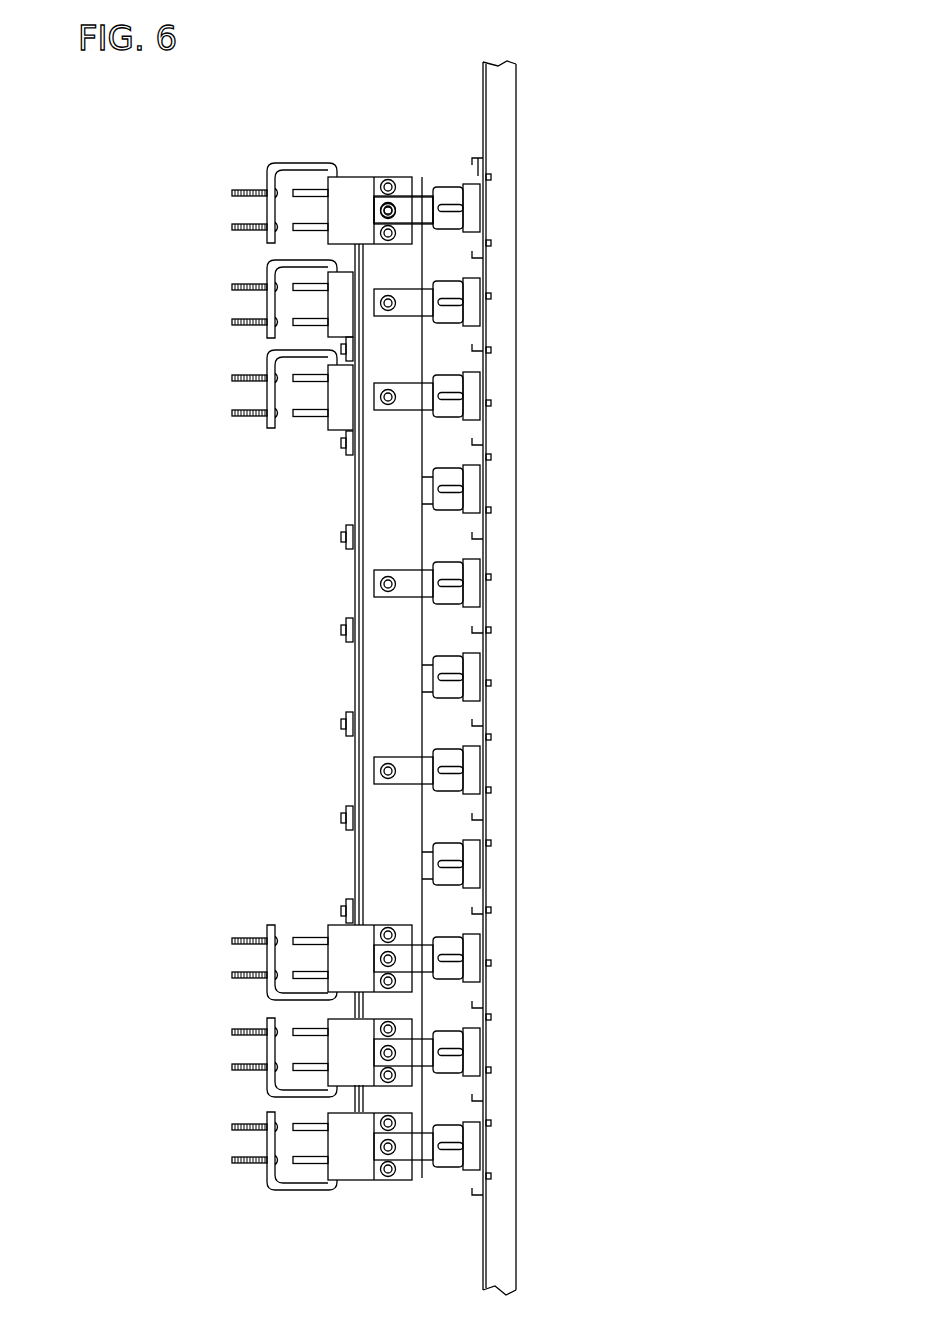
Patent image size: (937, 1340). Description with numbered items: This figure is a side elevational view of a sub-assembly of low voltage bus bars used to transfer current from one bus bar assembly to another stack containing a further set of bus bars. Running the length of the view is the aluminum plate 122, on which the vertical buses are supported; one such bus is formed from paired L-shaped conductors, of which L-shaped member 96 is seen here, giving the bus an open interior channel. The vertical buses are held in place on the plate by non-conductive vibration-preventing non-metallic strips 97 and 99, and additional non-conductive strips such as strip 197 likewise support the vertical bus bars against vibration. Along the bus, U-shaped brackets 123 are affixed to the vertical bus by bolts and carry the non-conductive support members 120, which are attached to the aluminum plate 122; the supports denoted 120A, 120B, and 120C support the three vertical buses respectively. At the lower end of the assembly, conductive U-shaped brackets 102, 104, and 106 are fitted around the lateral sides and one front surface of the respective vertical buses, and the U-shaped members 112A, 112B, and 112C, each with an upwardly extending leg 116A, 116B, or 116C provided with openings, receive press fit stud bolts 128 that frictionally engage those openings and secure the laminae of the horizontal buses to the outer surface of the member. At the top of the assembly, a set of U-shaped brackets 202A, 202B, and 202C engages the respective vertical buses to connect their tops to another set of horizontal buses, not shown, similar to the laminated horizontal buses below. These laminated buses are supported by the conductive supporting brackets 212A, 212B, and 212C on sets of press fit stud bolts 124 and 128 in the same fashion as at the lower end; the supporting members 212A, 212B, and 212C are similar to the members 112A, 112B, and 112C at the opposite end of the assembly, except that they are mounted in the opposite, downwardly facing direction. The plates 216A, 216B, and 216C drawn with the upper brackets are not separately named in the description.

The L-shaped member 96 is at (404, 869).
The non-conductive vibration-preventing non-metallic strip 97 is at (343, 732).
The non-conductive vibration-preventing non-metallic strip 99 is at (344, 905).
The U-shaped bracket 102 is at (358, 1172).
The U-shaped bracket 104 is at (358, 1055).
The U-shaped bracket 106 is at (363, 940).
The U-shaped member 112A is at (297, 1192).
The U-shaped member 112B is at (262, 1018).
The U-shaped member 112C is at (300, 995).
The upwardly extending leg 116A is at (267, 1168).
The upwardly extending leg 116B is at (265, 1073).
The upwardly extending leg 116C is at (267, 963).
The non-conductive support member 120 is at (473, 492).
The non-conductive support 120A is at (470, 1150).
The non-conductive support 120B is at (465, 1058).
The non-conductive support 120C is at (463, 955).
The aluminum plate 122 is at (480, 656).
The U-shaped bracket 123 is at (407, 203).
The press fit stud bolt 124 is at (305, 193).
The press fit stud bolt 128 is at (230, 287).
The non-conductive strip 197 is at (343, 625).
The U-shaped bracket 202A is at (337, 402).
The U-shaped bracket 202B is at (332, 300).
The U-shaped bracket 202C is at (368, 195).
The conductive supporting bracket 212A is at (292, 349).
The conductive supporting bracket 212B is at (297, 259).
The conductive supporting bracket 212C is at (290, 162).
The bracket plate 216A is at (232, 411).
The bracket plate 216B is at (267, 300).
The bracket plate 216C is at (267, 183).